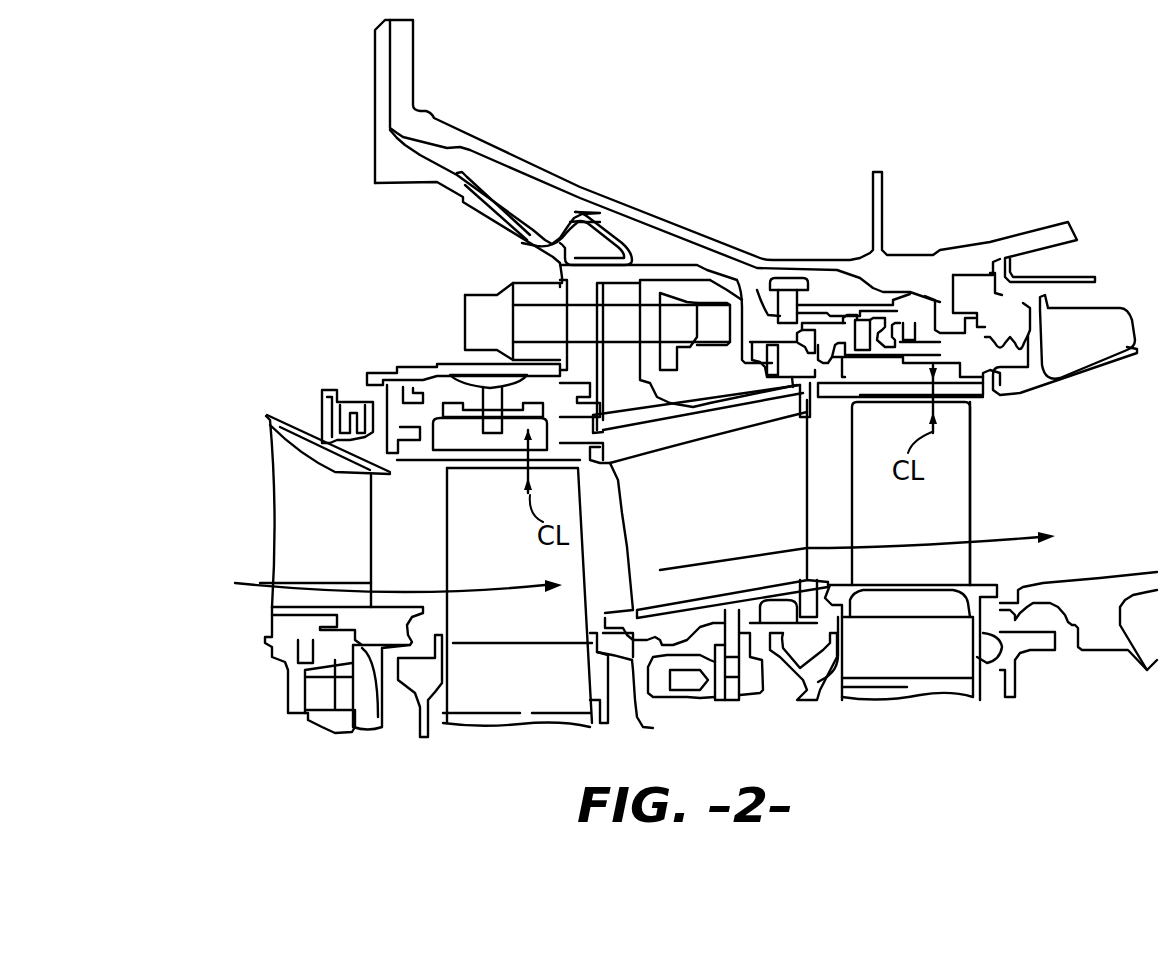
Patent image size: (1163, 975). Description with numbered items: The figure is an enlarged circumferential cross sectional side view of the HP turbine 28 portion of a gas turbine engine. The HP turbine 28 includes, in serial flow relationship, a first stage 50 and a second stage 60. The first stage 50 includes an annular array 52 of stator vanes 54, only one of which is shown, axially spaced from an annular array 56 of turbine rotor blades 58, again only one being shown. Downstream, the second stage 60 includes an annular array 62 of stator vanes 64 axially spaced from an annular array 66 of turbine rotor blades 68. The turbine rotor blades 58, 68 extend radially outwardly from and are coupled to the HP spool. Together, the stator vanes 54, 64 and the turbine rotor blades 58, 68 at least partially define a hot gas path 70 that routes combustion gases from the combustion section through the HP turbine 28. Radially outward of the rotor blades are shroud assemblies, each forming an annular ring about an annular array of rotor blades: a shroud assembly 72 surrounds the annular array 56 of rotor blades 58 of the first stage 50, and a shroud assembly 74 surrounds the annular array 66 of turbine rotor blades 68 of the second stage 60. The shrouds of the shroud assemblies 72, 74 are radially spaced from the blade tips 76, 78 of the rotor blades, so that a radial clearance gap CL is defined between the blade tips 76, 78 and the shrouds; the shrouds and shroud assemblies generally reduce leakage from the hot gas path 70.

The HP turbine 28 is at (833, 138).
The first stage 50 is at (408, 762).
The annular array of stator vanes 52 is at (268, 488).
The stator vane 54 is at (308, 540).
The annular array of turbine rotor blades 56 is at (442, 553).
The turbine rotor blade 58 is at (496, 572).
The second stage 60 is at (737, 725).
The annular array of stator vanes 62 is at (620, 503).
The stator vane 64 is at (702, 512).
The annular array of turbine rotor blades 66 is at (980, 514).
The turbine rotor blade 68 is at (896, 527).
The hot gas path 70 is at (262, 578).
The shroud assembly 72 is at (404, 352).
The shroud assembly 74 is at (918, 330).
The blade tip 76 is at (480, 466).
The blade tip 78 is at (910, 405).